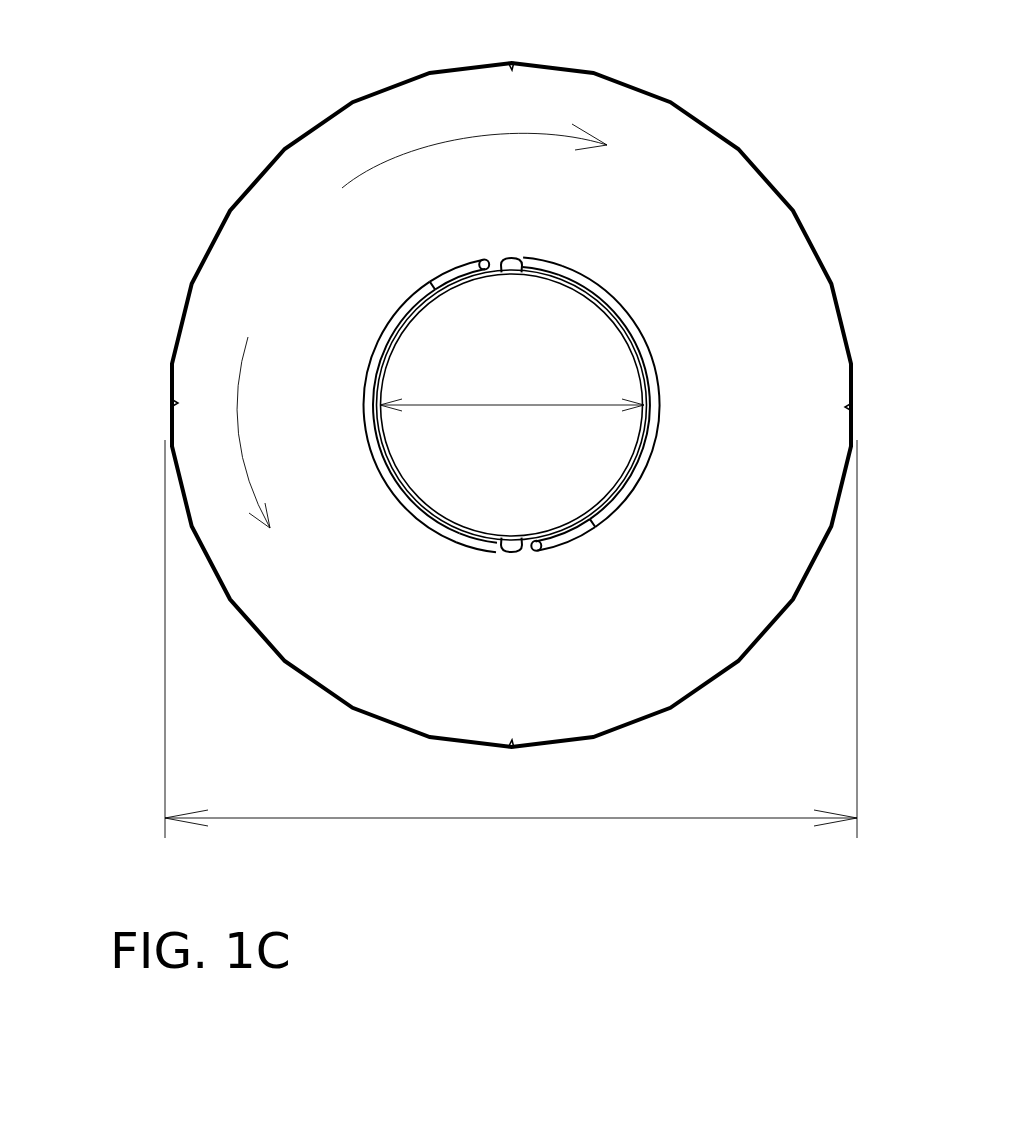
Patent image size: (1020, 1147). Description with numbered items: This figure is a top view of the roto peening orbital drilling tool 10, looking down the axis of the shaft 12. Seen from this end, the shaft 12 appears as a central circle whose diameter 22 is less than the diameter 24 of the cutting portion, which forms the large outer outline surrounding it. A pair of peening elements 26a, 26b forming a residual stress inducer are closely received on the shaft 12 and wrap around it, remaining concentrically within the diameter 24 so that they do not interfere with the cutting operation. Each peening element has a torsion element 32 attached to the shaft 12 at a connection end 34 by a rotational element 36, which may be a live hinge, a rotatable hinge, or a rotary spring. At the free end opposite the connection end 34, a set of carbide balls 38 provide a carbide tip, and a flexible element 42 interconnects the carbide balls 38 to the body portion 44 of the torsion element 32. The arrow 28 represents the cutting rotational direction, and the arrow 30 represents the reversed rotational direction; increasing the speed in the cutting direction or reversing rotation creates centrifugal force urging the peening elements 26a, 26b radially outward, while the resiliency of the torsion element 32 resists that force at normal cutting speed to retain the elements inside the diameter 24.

The roto peening orbital drilling tool 10 is at (748, 52).
The shaft 12 is at (445, 335).
The diameter 22 is at (513, 403).
The diameter 24 is at (511, 820).
The peening element 26a is at (676, 324).
The peening element 26b is at (372, 532).
The arrow 28 is at (240, 419).
The arrow 30 is at (460, 135).
The torsion element 32 is at (660, 398).
The connection end 34 is at (538, 272).
The rotational element 36 is at (513, 268).
The carbide balls 38 is at (490, 258).
The flexible element 42 is at (457, 272).
The body portion 44 is at (388, 332).